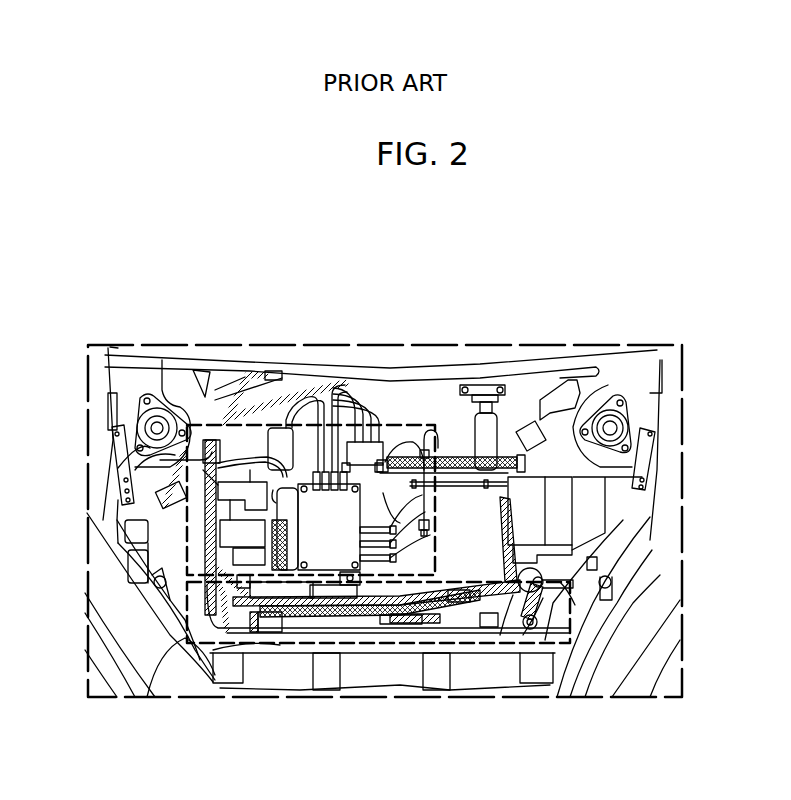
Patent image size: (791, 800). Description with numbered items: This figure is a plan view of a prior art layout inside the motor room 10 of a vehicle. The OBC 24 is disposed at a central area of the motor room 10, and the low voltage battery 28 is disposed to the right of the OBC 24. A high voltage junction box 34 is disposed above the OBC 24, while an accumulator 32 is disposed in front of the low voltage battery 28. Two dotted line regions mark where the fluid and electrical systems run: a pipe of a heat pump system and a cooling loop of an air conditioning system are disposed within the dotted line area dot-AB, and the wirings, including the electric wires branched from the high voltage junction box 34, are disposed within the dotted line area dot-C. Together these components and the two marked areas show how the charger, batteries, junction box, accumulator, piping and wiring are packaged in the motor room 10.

The motor room 10 is at (80, 493).
The OBC 24 is at (430, 533).
The low voltage battery 28 is at (545, 502).
The accumulator 32 is at (530, 592).
The high voltage junction box 34 is at (313, 542).
The dotted line area dot-C is at (265, 424).
The dotted line area dot-AB is at (188, 636).